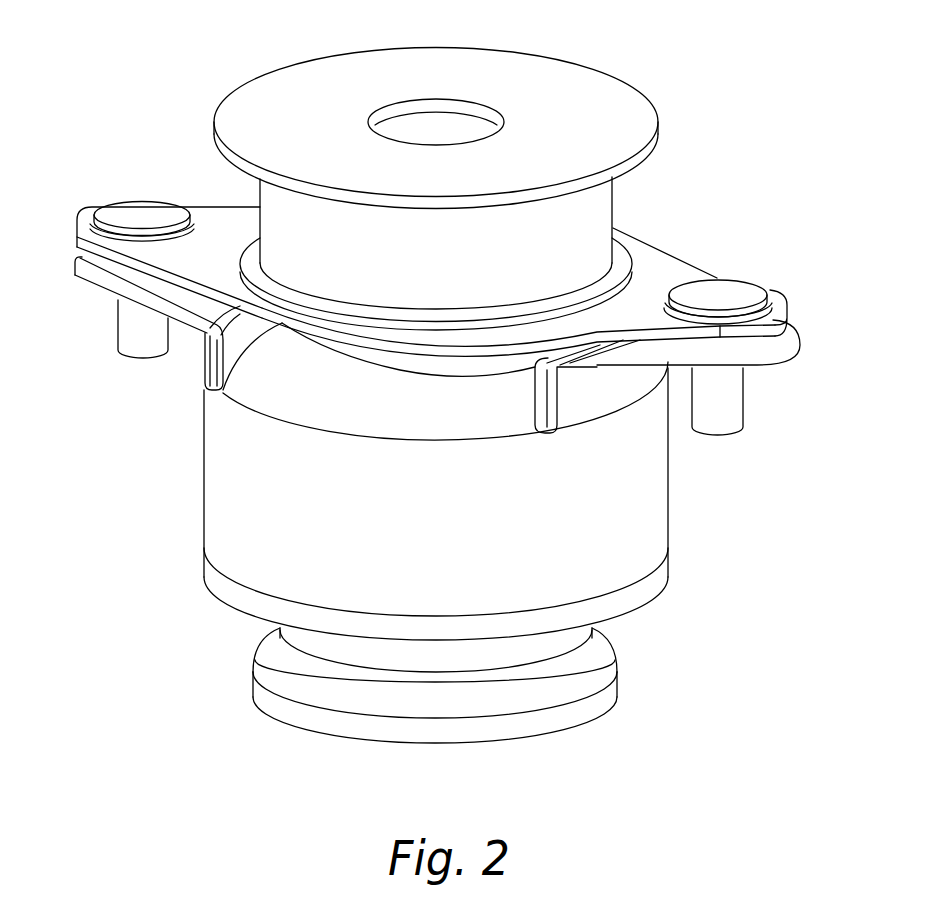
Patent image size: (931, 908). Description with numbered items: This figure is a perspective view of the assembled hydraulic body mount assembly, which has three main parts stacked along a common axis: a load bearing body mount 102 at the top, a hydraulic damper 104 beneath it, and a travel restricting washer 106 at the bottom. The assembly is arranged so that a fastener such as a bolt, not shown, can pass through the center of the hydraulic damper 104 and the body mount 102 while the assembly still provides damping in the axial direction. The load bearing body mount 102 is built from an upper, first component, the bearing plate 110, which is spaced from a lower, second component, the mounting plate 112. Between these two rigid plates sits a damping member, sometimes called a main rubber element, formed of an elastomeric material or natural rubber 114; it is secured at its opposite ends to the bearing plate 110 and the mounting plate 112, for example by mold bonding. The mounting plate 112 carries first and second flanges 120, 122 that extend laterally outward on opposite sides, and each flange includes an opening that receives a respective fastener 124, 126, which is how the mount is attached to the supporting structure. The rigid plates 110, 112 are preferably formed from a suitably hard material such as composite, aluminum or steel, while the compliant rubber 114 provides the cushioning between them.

The load bearing body mount 102 is at (141, 110).
The hydraulic damper 104 is at (155, 446).
The travel restricting washer 106 is at (664, 656).
The bearing plate 110 is at (590, 95).
The mounting plate 112 is at (663, 265).
The elastomeric material or natural rubber 114 is at (610, 212).
The first flange 120 is at (235, 213).
The second flange 122 is at (777, 303).
The fastener 124 is at (132, 213).
The fastener 126 is at (733, 290).